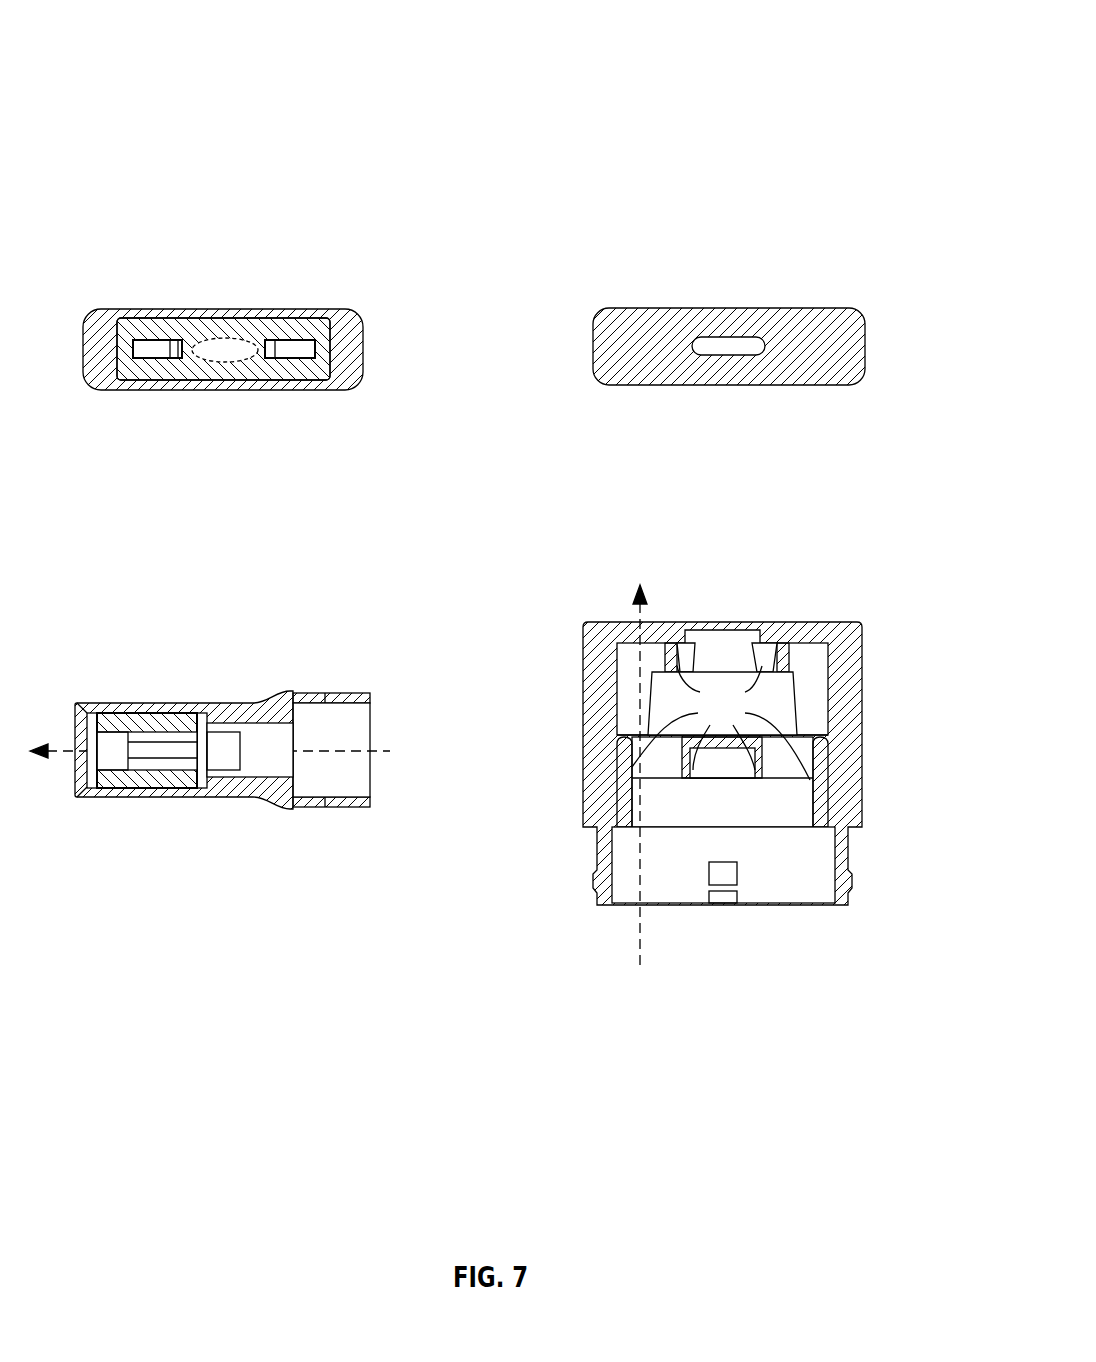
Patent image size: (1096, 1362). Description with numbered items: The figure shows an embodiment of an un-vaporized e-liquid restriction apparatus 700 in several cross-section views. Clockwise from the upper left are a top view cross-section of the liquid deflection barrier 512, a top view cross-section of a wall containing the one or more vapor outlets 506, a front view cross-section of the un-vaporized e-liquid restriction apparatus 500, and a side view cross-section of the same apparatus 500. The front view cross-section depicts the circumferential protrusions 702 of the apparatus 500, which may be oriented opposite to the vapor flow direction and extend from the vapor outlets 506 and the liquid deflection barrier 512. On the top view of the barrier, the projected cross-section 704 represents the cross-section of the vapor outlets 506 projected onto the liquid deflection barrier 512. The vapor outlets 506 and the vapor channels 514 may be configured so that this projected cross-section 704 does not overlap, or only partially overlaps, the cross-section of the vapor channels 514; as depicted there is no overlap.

The un-vaporized e-liquid restriction apparatus 700 is at (862, 68).
The un-vaporized e-liquid restriction apparatus 500 is at (613, 385).
The liquid deflection barrier 512 is at (195, 720).
The vapor channels 514 is at (155, 347).
The projected cross-section 704 is at (245, 360).
The vapor outlets 506 is at (707, 343).
The circumferential protrusions 702 is at (721, 711).